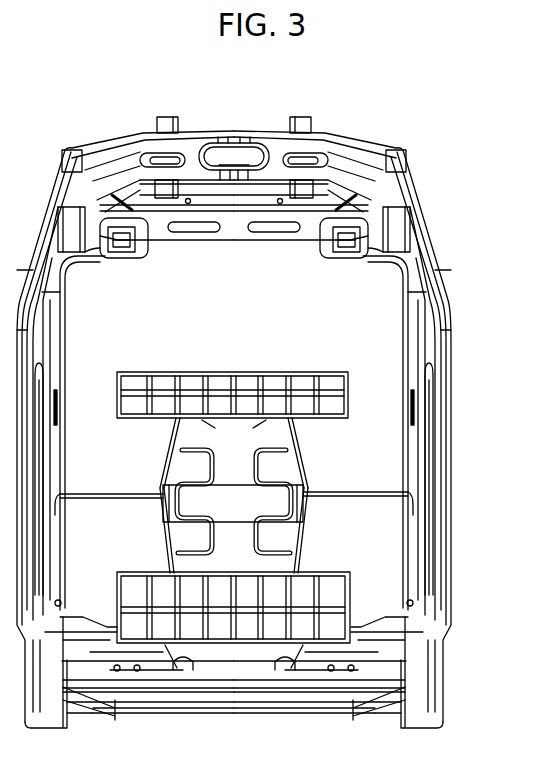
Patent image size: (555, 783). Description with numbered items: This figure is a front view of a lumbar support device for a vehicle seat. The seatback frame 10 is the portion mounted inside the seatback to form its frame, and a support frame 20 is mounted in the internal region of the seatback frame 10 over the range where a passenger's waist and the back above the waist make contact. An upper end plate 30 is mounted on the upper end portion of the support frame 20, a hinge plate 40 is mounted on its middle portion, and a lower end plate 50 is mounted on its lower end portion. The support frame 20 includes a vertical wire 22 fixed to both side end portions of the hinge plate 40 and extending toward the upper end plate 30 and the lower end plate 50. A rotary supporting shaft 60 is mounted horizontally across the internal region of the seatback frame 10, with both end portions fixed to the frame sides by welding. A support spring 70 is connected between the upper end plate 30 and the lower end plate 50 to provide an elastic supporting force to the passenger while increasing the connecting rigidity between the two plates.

The seatback frame 10 is at (422, 308).
The support frame 20 is at (297, 461).
The vertical wire 22 is at (300, 547).
The upper end plate 30 is at (265, 372).
The hinge plate 40 is at (227, 509).
The lower end plate 50 is at (137, 590).
The rotary supporting shaft 60 is at (377, 490).
The support spring 70 is at (198, 452).